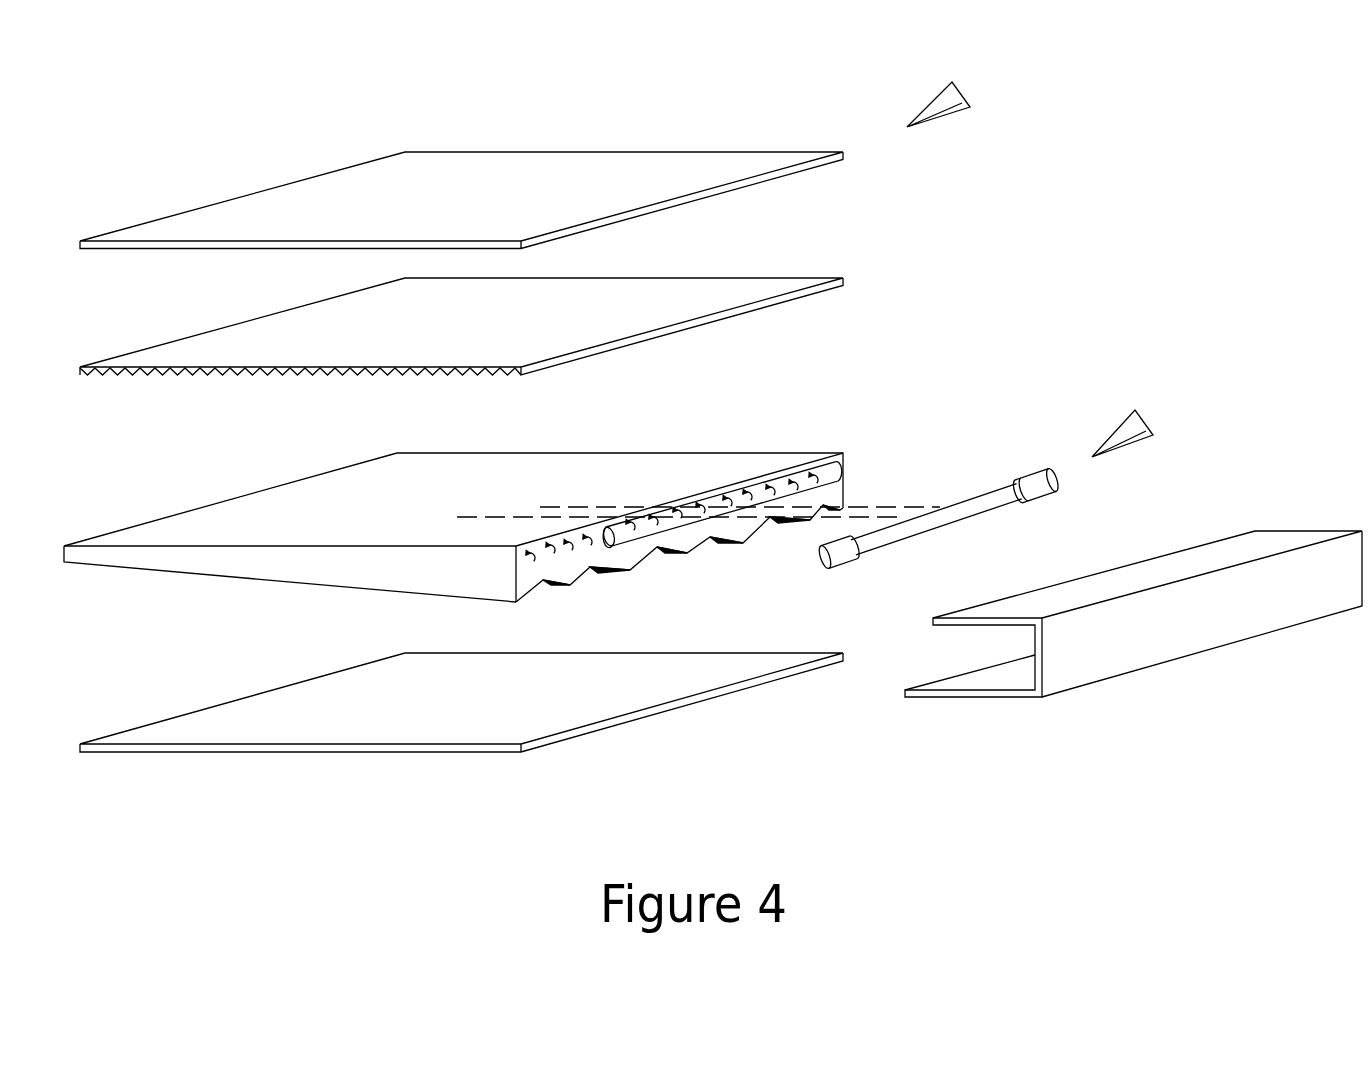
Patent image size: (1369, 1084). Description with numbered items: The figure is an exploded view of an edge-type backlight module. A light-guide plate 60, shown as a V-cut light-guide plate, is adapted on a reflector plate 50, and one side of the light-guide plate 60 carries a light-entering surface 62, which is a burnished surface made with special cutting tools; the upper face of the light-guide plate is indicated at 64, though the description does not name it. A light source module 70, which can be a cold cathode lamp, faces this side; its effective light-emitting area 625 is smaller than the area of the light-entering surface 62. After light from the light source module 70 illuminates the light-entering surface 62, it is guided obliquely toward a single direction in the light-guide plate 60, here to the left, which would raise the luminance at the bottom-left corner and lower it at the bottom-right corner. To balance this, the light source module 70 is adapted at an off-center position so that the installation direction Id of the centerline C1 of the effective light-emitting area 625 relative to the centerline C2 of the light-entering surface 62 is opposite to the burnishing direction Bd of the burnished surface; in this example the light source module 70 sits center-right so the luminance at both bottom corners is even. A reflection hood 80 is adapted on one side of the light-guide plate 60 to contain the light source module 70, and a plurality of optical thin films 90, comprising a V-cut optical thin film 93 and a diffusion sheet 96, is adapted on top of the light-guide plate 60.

The reflector plate 50 is at (683, 703).
The light-guide plate 60 is at (453, 510).
The light-entering surface 62 is at (560, 543).
The top surface of block 64 is at (562, 475).
The effective light-emitting area 625 is at (833, 477).
The light source module 70 is at (1157, 425).
The reflection hood 80 is at (1133, 645).
The optical thin films 90 is at (967, 100).
The V-cut optical thin film 93 is at (682, 300).
The diffusion sheet 96 is at (647, 165).
The installation direction Id is at (620, 500).
The burnishing direction Bd is at (558, 555).
The centerline of the effective light-emitting area C1 is at (940, 507).
The centerline of the light-entering surface C2 is at (837, 513).